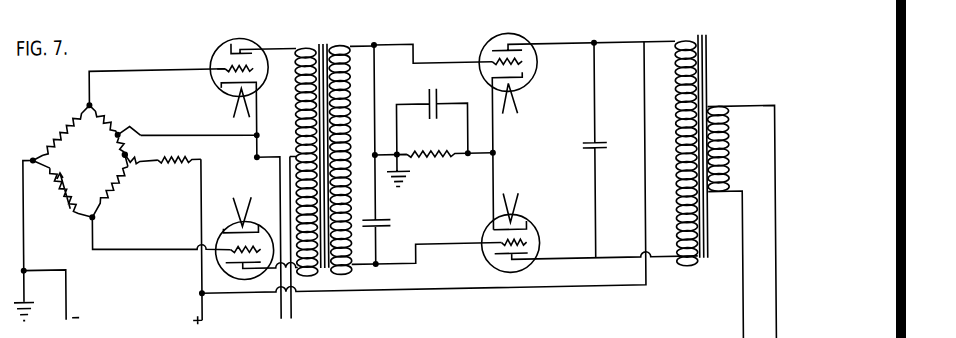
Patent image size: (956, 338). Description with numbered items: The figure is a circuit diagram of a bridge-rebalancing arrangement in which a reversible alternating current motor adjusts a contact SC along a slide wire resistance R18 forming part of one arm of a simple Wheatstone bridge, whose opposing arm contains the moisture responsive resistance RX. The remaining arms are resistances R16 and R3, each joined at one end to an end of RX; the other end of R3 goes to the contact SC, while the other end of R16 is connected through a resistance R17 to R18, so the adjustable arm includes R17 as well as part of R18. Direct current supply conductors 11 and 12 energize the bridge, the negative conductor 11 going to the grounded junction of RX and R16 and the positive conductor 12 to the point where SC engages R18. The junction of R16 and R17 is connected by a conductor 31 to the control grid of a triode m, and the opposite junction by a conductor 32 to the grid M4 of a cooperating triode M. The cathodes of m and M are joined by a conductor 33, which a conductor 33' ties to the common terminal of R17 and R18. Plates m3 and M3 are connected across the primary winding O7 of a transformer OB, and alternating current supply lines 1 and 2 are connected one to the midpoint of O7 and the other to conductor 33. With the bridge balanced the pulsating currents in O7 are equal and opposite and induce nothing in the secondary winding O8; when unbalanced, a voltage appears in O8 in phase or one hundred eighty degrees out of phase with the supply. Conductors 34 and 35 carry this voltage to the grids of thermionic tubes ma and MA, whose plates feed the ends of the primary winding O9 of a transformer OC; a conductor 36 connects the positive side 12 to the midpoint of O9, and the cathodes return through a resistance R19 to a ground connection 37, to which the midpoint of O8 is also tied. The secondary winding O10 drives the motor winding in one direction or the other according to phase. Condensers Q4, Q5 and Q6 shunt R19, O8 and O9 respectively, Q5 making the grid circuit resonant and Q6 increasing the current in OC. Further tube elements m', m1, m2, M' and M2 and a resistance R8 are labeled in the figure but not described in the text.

The conductor 31 is at (125, 64).
The conductor 32 is at (120, 243).
The conductor 33 is at (199, 145).
The conductor 33' is at (150, 122).
The conductor 34 is at (400, 42).
The conductor 35 is at (385, 263).
The conductor 36 is at (448, 288).
The ground connection 37 is at (408, 168).
The direct current supply conductor 11 is at (65, 283).
The direct current supply conductor 12 is at (201, 298).
The supply conductor 1 is at (292, 299).
The supply conductor 2 is at (281, 303).
The resistance R16 is at (58, 125).
The resistance R17 is at (103, 106).
The slide wire resistance R18 is at (133, 152).
The resistance R3 is at (115, 198).
The resistor R8 is at (179, 150).
The resistance R19 is at (423, 151).
The moisture responsive resistance RX is at (55, 182).
The contact SC is at (122, 146).
The triode M is at (233, 266).
The heater filament M' is at (243, 199).
The anode of tube M2 is at (223, 227).
The plate of triode M M3 is at (242, 265).
The grid of triode M M4 is at (224, 238).
The triode element m is at (244, 59).
The heater filament m' is at (227, 103).
The grid of tube m1 is at (222, 63).
The cathode of tube m2 is at (221, 80).
The plate of triode m m3 is at (232, 38).
The thermionic tube ma is at (525, 30).
The thermionic tube MA is at (489, 268).
The primary winding O7 is at (300, 103).
The secondary winding O8 is at (345, 110).
The primary winding O9 is at (677, 78).
The secondary winding O10 is at (729, 158).
The transformer OB is at (322, 43).
The transformer OC is at (701, 41).
The condenser Q4 is at (432, 89).
The condenser Q5 is at (391, 221).
The condenser Q6 is at (583, 149).